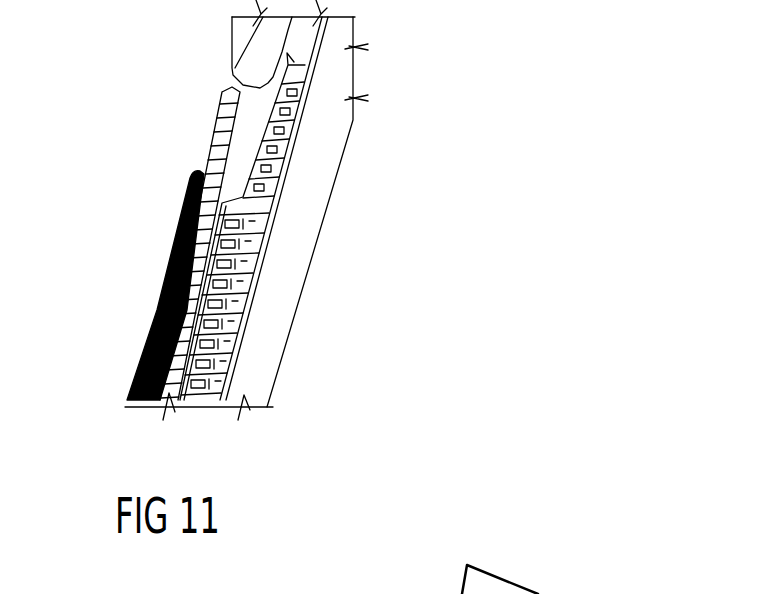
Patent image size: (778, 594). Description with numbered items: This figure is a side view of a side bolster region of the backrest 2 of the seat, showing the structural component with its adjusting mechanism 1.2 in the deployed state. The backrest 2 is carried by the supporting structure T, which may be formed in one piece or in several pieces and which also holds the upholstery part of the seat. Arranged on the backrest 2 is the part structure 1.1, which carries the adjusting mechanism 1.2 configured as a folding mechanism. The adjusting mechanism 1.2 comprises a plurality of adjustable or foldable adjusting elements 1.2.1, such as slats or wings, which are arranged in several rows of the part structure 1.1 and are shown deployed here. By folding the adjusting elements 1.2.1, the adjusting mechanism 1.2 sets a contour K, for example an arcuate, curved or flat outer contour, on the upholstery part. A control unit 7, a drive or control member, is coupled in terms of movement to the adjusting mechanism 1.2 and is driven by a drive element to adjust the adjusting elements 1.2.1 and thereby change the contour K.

The backrest 2 is at (388, 75).
The supporting structure T is at (322, 170).
The control unit 7 is at (240, 48).
The part structure 1.1 is at (239, 152).
The adjusting mechanism 1.2 is at (172, 239).
The adjusting elements 1.2.1 is at (157, 308).
The contour K is at (134, 176).